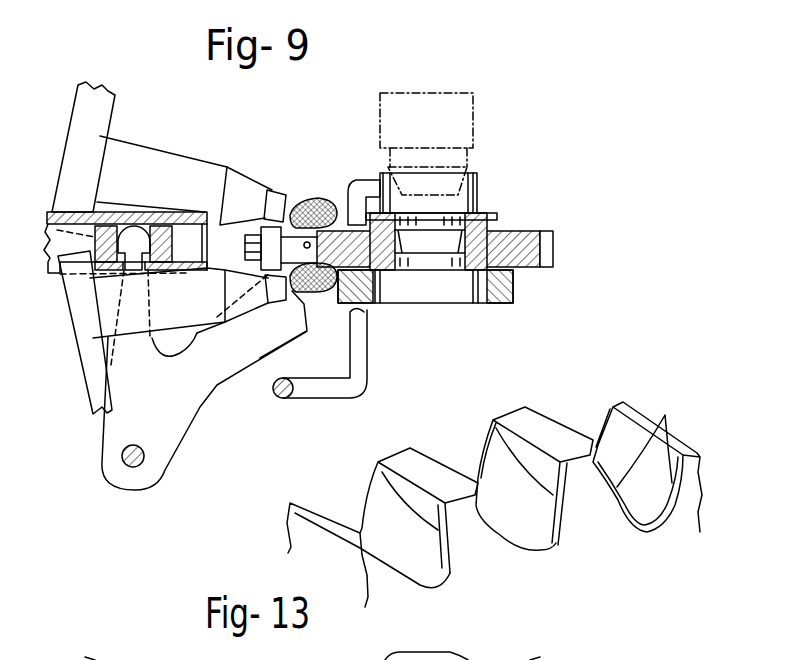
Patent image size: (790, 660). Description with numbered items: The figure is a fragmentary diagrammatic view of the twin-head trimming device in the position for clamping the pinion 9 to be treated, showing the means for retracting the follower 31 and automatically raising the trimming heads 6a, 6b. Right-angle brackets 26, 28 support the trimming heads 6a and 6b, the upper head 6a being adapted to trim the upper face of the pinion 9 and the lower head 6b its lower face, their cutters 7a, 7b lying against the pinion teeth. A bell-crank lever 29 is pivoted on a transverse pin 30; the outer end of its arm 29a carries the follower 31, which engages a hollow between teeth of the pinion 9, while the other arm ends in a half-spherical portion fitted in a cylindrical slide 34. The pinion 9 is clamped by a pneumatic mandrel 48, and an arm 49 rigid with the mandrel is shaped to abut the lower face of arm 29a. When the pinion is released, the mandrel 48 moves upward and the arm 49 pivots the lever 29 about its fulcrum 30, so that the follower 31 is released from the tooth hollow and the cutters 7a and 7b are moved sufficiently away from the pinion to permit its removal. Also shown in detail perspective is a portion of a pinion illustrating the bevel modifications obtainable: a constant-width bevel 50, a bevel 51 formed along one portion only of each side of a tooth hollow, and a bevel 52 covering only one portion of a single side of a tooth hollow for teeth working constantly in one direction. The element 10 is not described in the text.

The right-angle bracket 26 is at (108, 120).
The trimming head 6a is at (175, 168).
The trimming head 6b is at (191, 312).
The cutter 7a is at (308, 198).
The cutter 7b is at (314, 284).
The cylindrical slide 34 is at (60, 231).
The right-angle bracket 28 is at (88, 352).
The bell-crank lever 29 is at (194, 428).
The arm 29a is at (243, 348).
The transverse pin 30 is at (140, 468).
The follower 31 is at (327, 215).
The pneumatic mandrel 48 is at (480, 191).
The pinion 9 is at (540, 227).
The nut 10 is at (445, 288).
The arm 49 is at (360, 352).
The constant-width bevel 50 is at (653, 440).
The bevel 51 is at (487, 477).
The bevel 52 is at (372, 482).